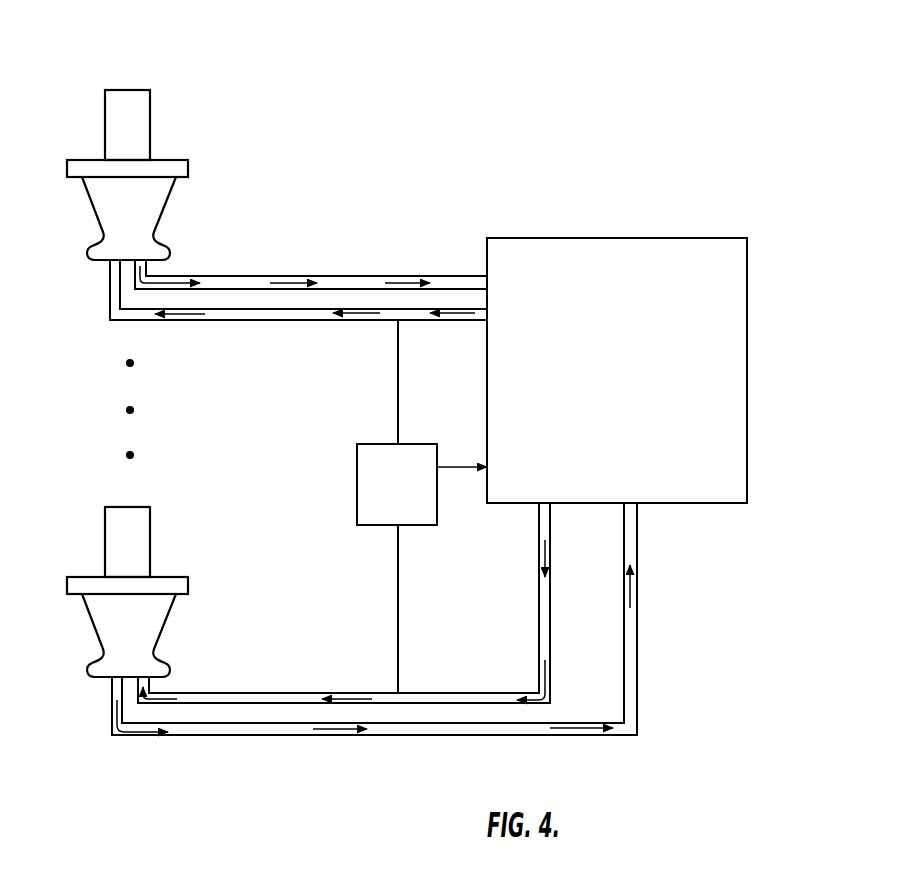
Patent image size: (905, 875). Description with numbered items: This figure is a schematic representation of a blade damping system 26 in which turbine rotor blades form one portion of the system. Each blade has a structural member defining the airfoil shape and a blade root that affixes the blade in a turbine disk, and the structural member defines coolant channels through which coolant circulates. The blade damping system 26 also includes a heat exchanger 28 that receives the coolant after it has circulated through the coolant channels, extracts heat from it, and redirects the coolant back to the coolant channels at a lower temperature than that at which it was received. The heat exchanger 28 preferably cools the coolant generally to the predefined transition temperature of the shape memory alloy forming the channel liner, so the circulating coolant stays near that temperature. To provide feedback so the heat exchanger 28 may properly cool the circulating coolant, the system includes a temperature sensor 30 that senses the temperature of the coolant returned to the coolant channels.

The blade damping system 26 is at (423, 174).
The heat exchanger 28 is at (557, 242).
The temperature sensor 30 is at (412, 446).